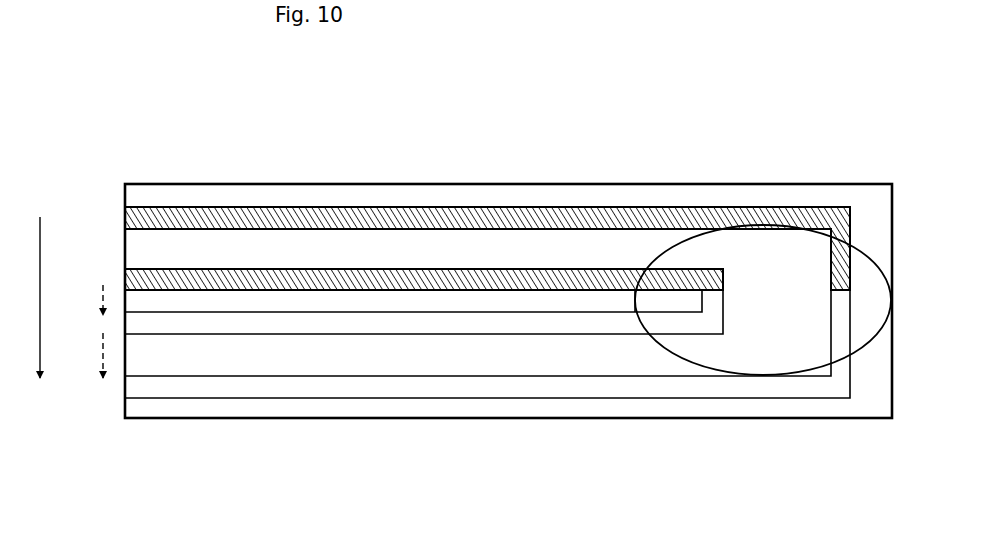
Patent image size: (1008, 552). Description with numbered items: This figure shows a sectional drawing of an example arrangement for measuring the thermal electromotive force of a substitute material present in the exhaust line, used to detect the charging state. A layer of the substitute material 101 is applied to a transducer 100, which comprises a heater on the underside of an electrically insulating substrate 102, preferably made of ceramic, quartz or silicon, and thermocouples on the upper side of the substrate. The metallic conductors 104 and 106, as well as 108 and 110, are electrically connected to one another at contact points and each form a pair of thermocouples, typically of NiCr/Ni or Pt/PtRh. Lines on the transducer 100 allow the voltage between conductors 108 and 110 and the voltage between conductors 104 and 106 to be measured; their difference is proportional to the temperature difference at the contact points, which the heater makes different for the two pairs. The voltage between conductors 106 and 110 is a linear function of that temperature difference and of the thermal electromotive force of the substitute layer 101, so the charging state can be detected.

The transducer 100 is at (466, 309).
The layer of substitute material 101 is at (750, 253).
The electrically insulating substrate 102 is at (312, 182).
The metallic conductor 104 is at (467, 213).
The metallic conductor 106 is at (452, 393).
The metallic conductor 108 is at (553, 267).
The metallic conductor 110 is at (525, 320).